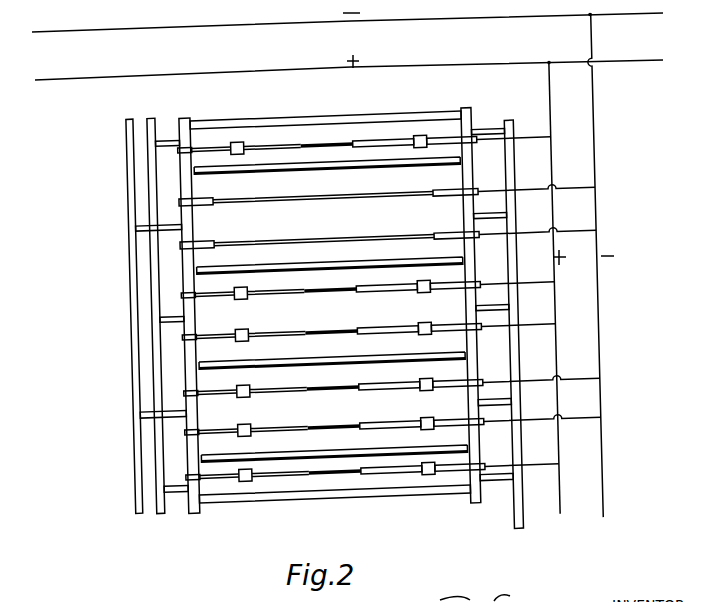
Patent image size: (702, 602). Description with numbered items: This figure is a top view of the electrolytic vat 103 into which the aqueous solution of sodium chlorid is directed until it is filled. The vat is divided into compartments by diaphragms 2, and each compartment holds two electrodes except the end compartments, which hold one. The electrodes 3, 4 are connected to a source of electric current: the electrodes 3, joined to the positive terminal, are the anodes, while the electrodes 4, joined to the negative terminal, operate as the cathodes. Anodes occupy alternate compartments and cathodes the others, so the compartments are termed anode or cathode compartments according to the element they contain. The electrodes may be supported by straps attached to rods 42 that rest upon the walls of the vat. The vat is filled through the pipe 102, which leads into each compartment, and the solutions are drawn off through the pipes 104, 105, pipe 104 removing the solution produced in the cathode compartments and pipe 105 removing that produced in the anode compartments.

The diaphragm 2 is at (380, 167).
The electrode 3 is at (333, 292).
The electrode 4 is at (303, 203).
The rod 42 is at (307, 391).
The pipe 102 is at (519, 512).
The electrolytic vat 103 is at (409, 500).
The pipe 104 is at (128, 157).
The pipe 105 is at (156, 124).